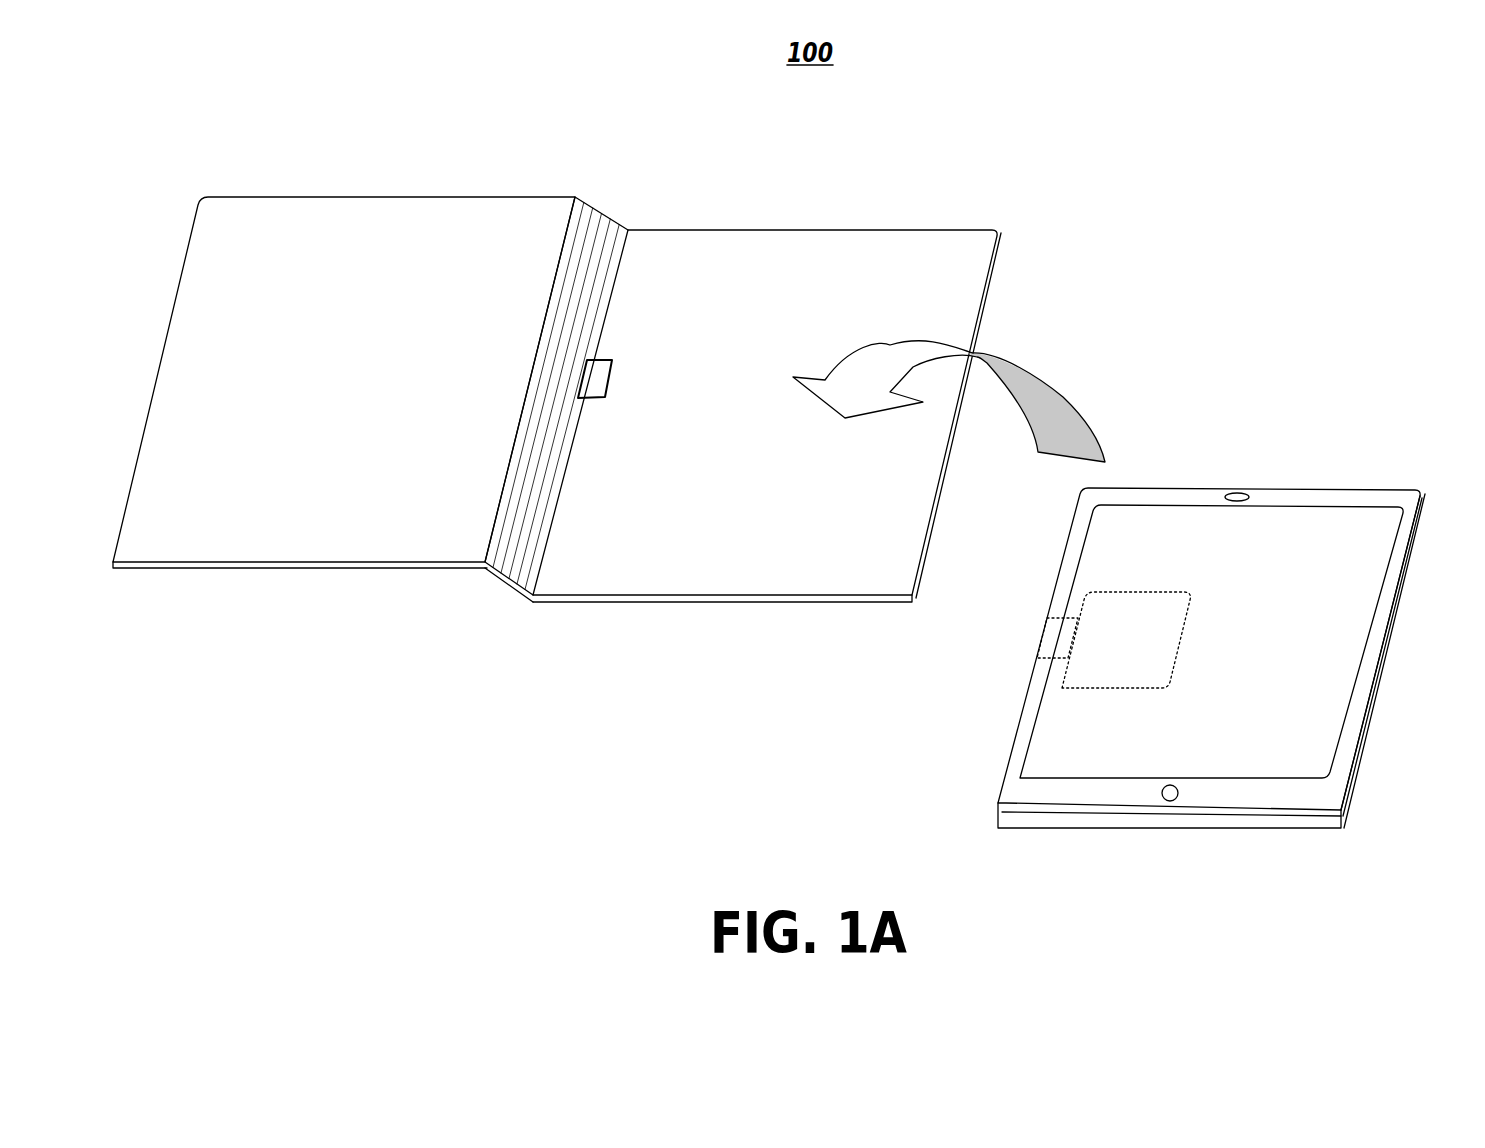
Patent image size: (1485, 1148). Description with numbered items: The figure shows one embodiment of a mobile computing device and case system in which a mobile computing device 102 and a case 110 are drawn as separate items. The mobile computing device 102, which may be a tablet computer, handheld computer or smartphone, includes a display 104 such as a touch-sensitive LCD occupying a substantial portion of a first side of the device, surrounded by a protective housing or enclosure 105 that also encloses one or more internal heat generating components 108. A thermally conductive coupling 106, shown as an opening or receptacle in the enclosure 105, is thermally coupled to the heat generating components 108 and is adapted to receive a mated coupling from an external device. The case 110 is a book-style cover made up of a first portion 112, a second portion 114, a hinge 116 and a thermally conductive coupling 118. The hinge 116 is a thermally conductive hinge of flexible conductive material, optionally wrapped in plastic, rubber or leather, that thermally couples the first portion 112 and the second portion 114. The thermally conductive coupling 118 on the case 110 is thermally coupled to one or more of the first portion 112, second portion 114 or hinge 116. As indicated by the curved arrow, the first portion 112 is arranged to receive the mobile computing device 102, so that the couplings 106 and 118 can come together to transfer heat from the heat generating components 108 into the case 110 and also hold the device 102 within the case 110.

The mobile computing device 102 is at (1188, 657).
The display 104 is at (1233, 763).
The enclosure 105 is at (1358, 700).
The thermally conductive coupling 106 is at (1047, 633).
The heat generating components 108 is at (1105, 667).
The case 110 is at (557, 391).
The first portion 112 is at (715, 253).
The second portion 114 is at (262, 228).
The hinge 116 is at (502, 563).
The thermally conductive coupling 118 is at (592, 373).